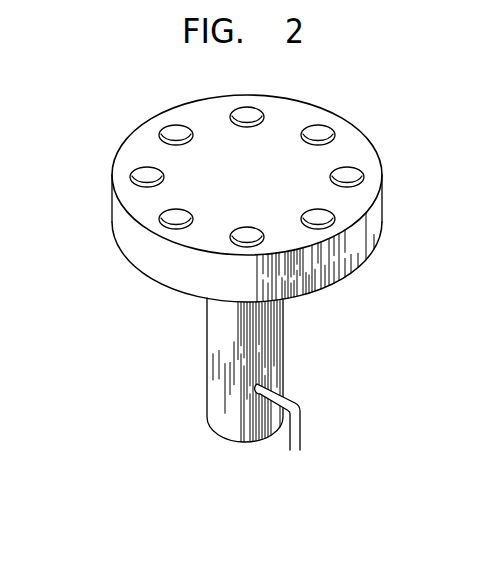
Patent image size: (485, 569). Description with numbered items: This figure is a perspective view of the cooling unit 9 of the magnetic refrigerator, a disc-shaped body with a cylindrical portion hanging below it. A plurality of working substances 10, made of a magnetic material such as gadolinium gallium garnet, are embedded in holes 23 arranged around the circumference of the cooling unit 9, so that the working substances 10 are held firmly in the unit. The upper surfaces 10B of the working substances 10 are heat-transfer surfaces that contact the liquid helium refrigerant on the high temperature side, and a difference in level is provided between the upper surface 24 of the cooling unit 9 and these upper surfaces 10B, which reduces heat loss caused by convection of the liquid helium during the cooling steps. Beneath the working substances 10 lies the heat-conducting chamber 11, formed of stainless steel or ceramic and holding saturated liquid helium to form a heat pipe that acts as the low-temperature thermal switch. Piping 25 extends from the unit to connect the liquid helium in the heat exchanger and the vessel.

The cooling unit 9 is at (378, 222).
The working substances 10 is at (322, 142).
The upper surfaces of the working substances 10B is at (140, 178).
The heat-conducting chamber 11 is at (280, 343).
The holes 23 is at (362, 173).
The upper surface of the cooling unit 24 is at (145, 133).
The piping 25 is at (301, 408).